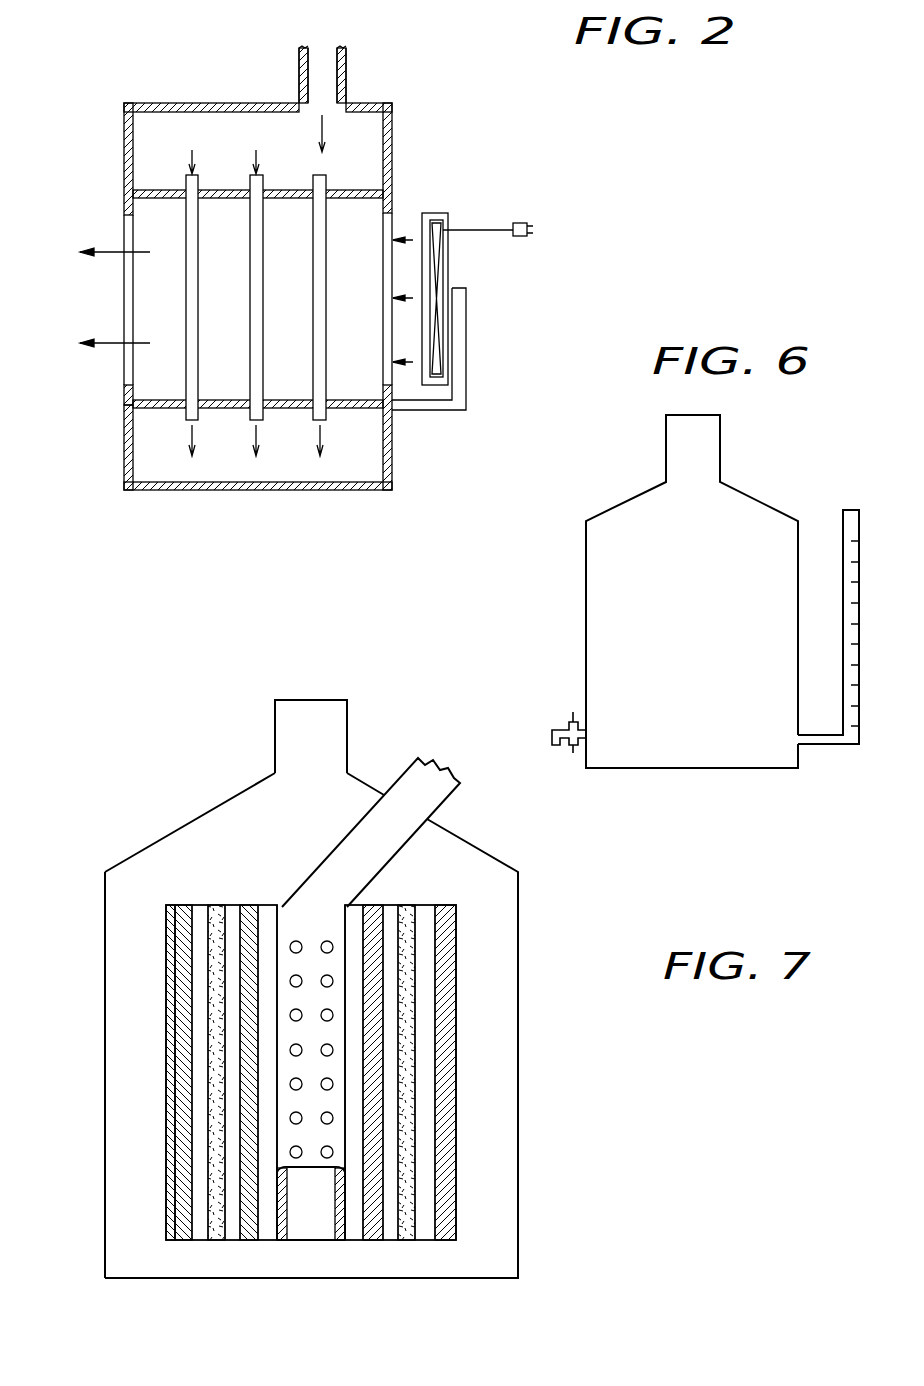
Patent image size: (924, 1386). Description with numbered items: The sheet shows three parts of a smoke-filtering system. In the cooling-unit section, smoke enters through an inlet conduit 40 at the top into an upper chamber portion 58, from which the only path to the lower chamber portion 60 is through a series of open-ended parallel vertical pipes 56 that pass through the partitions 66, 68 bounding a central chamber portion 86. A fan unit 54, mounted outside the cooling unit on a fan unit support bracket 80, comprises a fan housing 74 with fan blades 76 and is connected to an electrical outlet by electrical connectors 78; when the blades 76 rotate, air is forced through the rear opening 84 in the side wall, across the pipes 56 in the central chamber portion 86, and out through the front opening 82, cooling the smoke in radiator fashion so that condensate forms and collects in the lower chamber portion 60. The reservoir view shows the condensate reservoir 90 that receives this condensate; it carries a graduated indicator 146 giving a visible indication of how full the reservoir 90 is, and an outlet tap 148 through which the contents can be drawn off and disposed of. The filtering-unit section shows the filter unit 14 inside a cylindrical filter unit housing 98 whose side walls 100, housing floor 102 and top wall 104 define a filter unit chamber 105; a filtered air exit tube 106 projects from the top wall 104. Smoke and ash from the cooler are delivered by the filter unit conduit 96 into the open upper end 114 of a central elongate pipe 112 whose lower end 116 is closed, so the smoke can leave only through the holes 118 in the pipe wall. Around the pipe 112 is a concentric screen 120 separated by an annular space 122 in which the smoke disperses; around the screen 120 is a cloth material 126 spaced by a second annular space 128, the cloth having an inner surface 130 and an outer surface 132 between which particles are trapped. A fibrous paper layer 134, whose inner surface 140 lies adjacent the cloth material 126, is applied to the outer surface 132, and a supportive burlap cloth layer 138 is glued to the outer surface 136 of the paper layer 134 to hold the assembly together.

In FIG. 2, the inlet pipe 40 is at (332, 85).
In FIG. 2, the upper chamber portion 58 is at (145, 133).
In FIG. 2, the upper shelf 66 is at (150, 195).
In FIG. 2, the central chamber portion 86 is at (155, 302).
In FIG. 2, the front opening 82 is at (133, 383).
In FIG. 2, the lower shelf 68 is at (155, 410).
In FIG. 2, the lower chamber portion 60 is at (148, 459).
In FIG. 2, the rear opening 84 is at (396, 232).
In FIG. 2, the fan unit 54 is at (445, 213).
In FIG. 2, the fan housing 74 is at (450, 243).
In FIG. 2, the fan blades 76 is at (450, 258).
In FIG. 2, the electrical connectors 78 is at (532, 232).
In FIG. 2, the fan unit support bracket 80 is at (440, 413).
In FIG. 2, the vertical pipes 56 is at (327, 418).
In FIG. 6, the condensate reservoir 90 is at (765, 512).
In FIG. 6, the graduated indicator 146 is at (850, 746).
In FIG. 6, the outlet tap 148 is at (552, 736).
In FIG. 7, the filtered air exit tube 106 is at (280, 740).
In FIG. 7, the top wall 104 is at (163, 838).
In FIG. 7, the side walls 100 is at (105, 1157).
In FIG. 7, the filter unit chamber 105 is at (122, 1205).
In FIG. 7, the housing floor 102 is at (433, 1280).
In FIG. 7, the filter unit housing 98 is at (110, 1278).
In FIG. 7, the filter unit conduit 96 is at (447, 797).
In FIG. 7, the filter unit 14 is at (461, 937).
In FIG. 7, the inner surface of the paper layer 140 is at (190, 952).
In FIG. 7, the outer surface of the paper layer 136 is at (190, 1008).
In FIG. 7, the outer surface of the cloth material 132 is at (208, 1053).
In FIG. 7, the inner surface of the cloth material 130 is at (228, 1104).
In FIG. 7, the upper end 114 is at (317, 918).
In FIG. 7, the elongate pipe 112 is at (335, 967).
In FIG. 7, the holes 118 is at (333, 980).
In FIG. 7, the lower end 116 is at (307, 1240).
In FIG. 7, the annular space 122 is at (353, 1008).
In FIG. 7, the screen 120 is at (377, 1062).
In FIG. 7, the annular space 128 is at (393, 1095).
In FIG. 7, the cloth material 126 is at (405, 1138).
In FIG. 7, the fibrous paper layer 134 is at (440, 1182).
In FIG. 7, the supportive burlap cloth layer 138 is at (450, 1225).